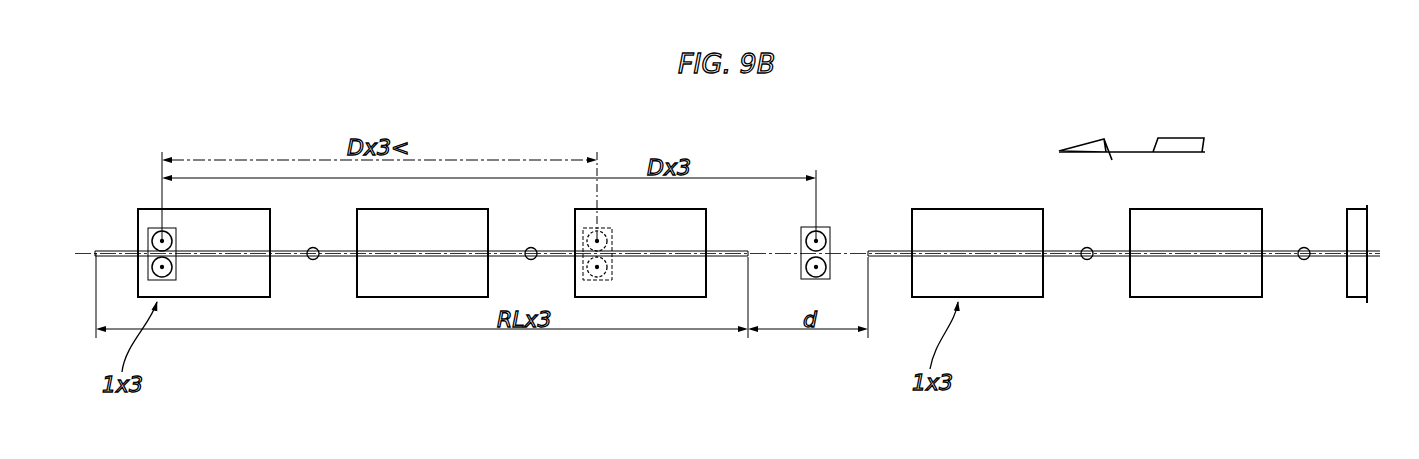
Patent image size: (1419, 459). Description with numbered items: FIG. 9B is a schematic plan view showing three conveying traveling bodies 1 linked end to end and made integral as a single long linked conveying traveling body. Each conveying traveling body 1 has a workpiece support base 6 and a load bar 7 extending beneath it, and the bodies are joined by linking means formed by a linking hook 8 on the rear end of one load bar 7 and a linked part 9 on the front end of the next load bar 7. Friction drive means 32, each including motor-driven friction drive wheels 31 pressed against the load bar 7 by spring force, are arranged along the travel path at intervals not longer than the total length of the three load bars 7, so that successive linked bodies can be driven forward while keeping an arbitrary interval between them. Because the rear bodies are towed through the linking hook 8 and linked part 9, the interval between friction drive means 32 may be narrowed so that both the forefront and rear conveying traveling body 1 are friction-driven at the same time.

The conveying traveling body 1 is at (248, 302).
The workpiece support base 6 is at (227, 214).
The load bar 7 is at (340, 250).
The linking hook 8 is at (313, 260).
The linked part 9 is at (531, 247).
The friction drive wheel 31 is at (150, 268).
The friction drive means 32 is at (181, 273).